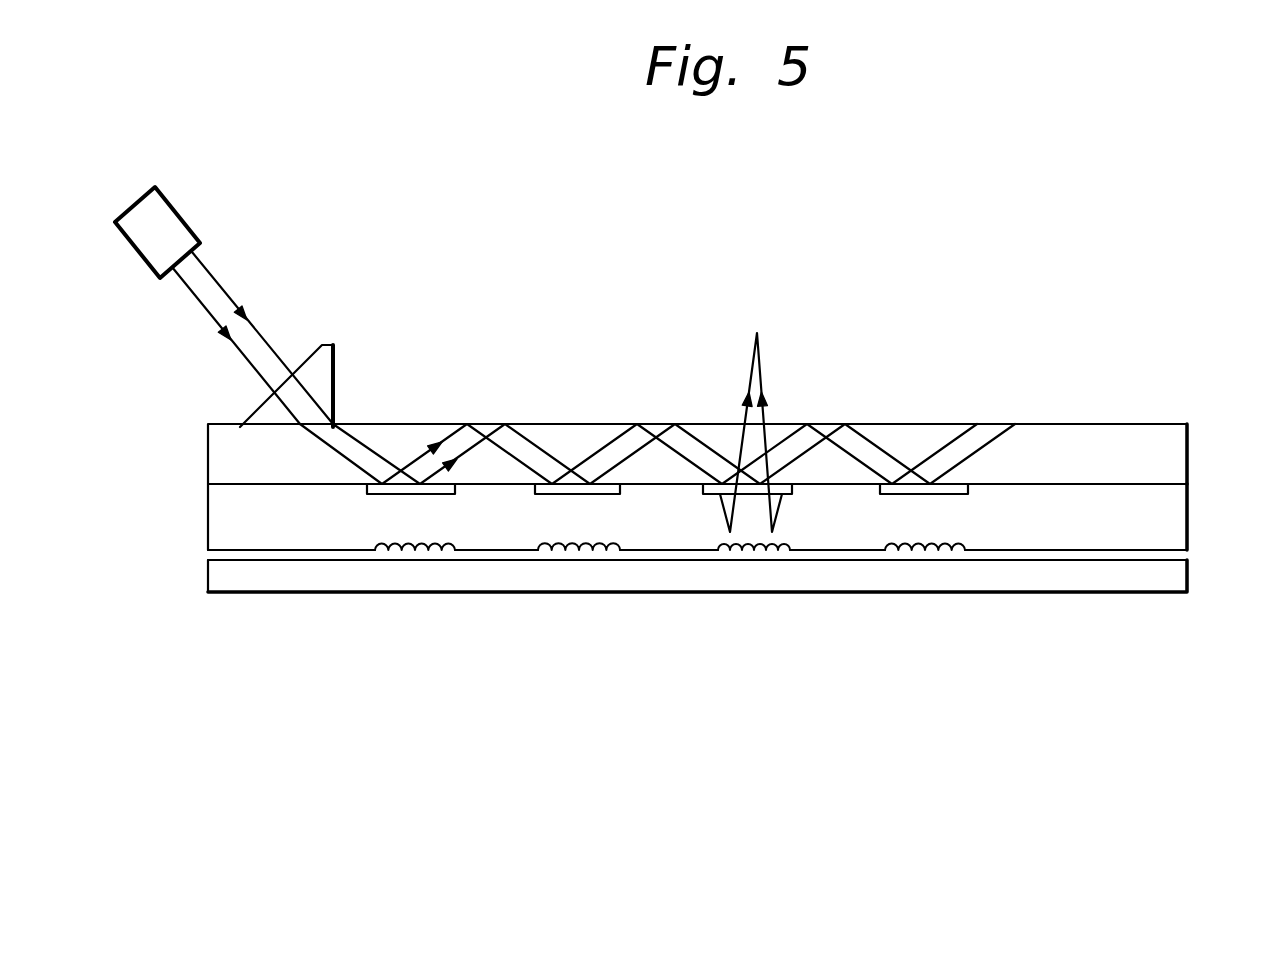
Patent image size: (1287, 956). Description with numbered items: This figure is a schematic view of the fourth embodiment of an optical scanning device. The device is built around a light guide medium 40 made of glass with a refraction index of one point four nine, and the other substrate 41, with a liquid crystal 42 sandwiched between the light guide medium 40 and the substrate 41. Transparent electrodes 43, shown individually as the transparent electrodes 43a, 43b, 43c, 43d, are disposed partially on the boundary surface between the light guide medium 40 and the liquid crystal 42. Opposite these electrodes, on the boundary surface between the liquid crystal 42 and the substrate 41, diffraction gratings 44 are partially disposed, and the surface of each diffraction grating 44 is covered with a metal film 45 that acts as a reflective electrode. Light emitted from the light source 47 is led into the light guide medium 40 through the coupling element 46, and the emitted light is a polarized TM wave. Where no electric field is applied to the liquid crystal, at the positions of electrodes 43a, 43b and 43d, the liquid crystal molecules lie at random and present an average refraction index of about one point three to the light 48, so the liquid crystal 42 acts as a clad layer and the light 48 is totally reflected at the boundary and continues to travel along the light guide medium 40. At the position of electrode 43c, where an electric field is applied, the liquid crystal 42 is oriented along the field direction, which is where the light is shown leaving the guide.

The light guide medium 40 is at (1172, 456).
The substrate 41 is at (1172, 580).
The liquid crystal 42 is at (1172, 522).
The transparent electrodes 43 is at (693, 596).
The transparent electrode 43a is at (442, 488).
The transparent electrode 43b is at (612, 490).
The transparent electrode 43c is at (783, 494).
The transparent electrode 43d is at (944, 565).
The diffraction grating 44 is at (397, 551).
The metal film 45 is at (208, 558).
The prism coupler 46 is at (323, 369).
The light source 47 is at (165, 220).
The light 48 is at (602, 437).